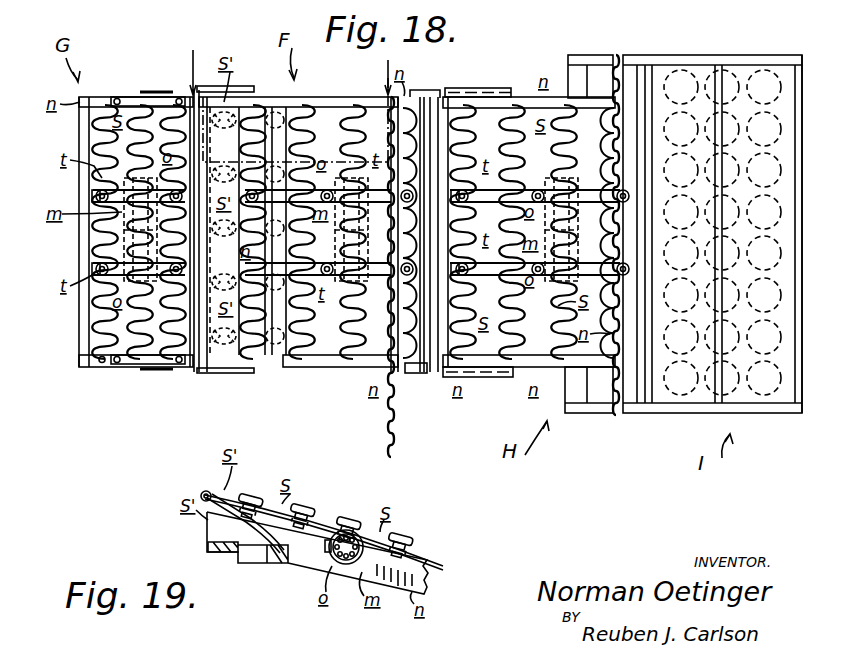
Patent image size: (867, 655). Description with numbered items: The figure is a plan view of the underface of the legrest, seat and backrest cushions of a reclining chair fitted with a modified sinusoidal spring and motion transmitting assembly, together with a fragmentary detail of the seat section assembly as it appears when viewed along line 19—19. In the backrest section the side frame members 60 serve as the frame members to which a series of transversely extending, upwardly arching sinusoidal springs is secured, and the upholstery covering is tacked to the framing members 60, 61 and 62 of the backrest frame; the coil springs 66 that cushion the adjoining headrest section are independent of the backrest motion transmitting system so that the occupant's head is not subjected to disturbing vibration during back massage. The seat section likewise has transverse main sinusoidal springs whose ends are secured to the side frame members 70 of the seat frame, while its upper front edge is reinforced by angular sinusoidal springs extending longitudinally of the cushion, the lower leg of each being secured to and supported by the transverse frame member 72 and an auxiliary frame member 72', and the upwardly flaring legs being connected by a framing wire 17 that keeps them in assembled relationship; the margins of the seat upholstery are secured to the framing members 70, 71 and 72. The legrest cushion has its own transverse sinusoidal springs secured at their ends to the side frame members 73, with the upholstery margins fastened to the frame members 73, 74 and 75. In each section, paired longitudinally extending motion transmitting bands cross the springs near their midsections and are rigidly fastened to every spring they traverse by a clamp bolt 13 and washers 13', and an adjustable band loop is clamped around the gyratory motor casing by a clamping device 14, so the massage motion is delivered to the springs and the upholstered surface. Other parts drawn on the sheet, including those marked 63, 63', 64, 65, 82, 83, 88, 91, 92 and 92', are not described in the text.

In FIG. 18, the clamp bolt 13 is at (336, 227).
In FIG. 19, the clamp bolt 13 is at (345, 517).
In FIG. 19, the washers 13' is at (389, 517).
In FIG. 18, the clamping device 14 is at (332, 262).
In FIG. 18, the framing wire 17 is at (160, 372).
In FIG. 19, the framing wire 17 is at (202, 494).
In FIG. 18, the line 19— 19 is at (275, 99).
In FIG. 18, the side frame members 60 is at (520, 96).
In FIG. 18, the framing member 61 is at (462, 126).
In FIG. 18, the framing member 62 is at (642, 66).
In FIG. 18, the plate edge 63 is at (773, 237).
In FIG. 18, the flexible strip 63' is at (599, 237).
In FIG. 18, the end block 64 is at (567, 69).
In FIG. 18, the central bar 65 is at (718, 66).
In FIG. 18, the coil springs 66 is at (688, 68).
In FIG. 18, the side frame members 70 is at (312, 97).
In FIG. 19, the side frame members 70 is at (432, 584).
In FIG. 18, the framing member 71 is at (422, 372).
In FIG. 18, the transverse frame member 72 is at (211, 250).
In FIG. 19, the transverse frame member 72 is at (222, 537).
In FIG. 18, the auxiliary frame member 72' is at (286, 254).
In FIG. 19, the auxiliary frame member 72' is at (269, 572).
In FIG. 18, the side frame members 73 is at (94, 96).
In FIG. 18, the frame member 74 is at (239, 355).
In FIG. 18, the frame member 75 is at (80, 150).
In FIG. 18, the bracket 82 is at (428, 88).
In FIG. 18, the hatched strip 83 is at (488, 88).
In FIG. 18, the plate 88 is at (244, 86).
In FIG. 18, the bar 91 is at (190, 92).
In FIG. 18, the clamp plate 92 is at (141, 235).
In FIG. 18, the clamp plate 92' is at (146, 234).